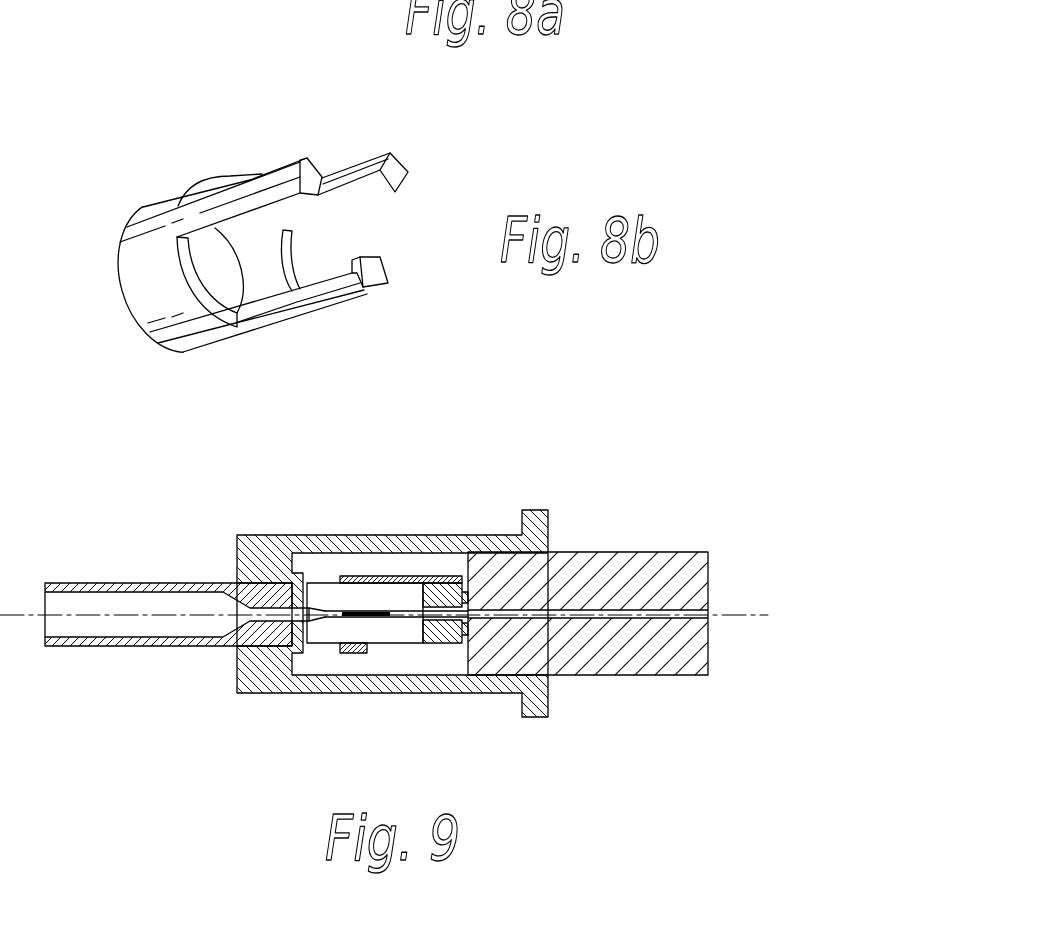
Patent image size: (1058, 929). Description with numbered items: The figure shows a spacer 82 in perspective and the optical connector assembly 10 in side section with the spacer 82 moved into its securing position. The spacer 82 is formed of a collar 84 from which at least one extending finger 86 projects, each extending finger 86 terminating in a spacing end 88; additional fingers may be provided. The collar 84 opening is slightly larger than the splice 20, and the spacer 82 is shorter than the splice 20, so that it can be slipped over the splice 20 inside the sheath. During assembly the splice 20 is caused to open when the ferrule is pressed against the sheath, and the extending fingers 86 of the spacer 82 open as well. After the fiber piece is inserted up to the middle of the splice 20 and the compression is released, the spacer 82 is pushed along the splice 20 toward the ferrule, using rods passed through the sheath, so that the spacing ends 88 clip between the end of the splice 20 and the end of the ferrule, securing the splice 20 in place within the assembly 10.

In FIG. 9, the optical connector assembly 10 is at (384, 582).
In FIG. 9, the splice 20 is at (336, 632).
In FIG. 8B, the spacer 82 is at (301, 219).
In FIG. 9, the spacer 82 is at (376, 579).
In FIG. 8B, the collar 84 is at (157, 296).
In FIG. 8B, the extending finger 86 is at (270, 187).
In FIG. 8B, the spacing end 88 is at (399, 162).